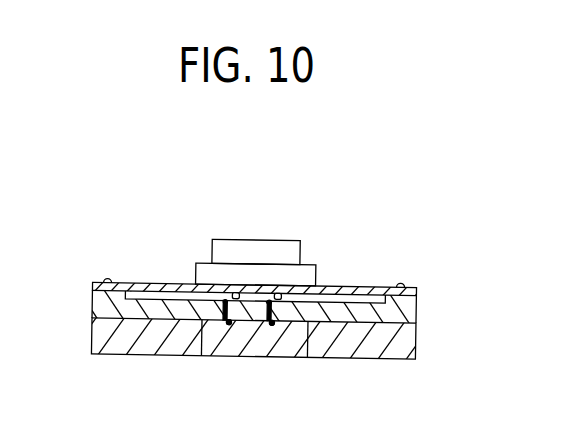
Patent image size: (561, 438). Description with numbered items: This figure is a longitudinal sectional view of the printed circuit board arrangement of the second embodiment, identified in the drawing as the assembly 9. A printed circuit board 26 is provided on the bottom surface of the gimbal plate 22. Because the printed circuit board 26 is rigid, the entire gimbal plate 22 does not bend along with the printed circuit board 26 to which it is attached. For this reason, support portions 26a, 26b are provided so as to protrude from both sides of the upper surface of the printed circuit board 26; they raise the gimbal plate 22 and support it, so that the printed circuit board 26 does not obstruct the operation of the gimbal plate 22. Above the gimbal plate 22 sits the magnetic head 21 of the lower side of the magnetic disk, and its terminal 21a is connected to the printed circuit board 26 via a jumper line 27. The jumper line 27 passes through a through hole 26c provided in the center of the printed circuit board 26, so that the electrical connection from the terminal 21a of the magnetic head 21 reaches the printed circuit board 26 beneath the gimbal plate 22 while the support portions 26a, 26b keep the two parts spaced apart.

The semiconductor device module 9 is at (259, 308).
The magnetic head 21 is at (299, 257).
The terminal 21a is at (237, 293).
The gimbal plate 22 is at (377, 287).
The printed circuit board 26 is at (366, 315).
The support portion 26a is at (92, 310).
The support portion 26b is at (418, 300).
The through hole 26c is at (215, 323).
The jumper line 27 is at (230, 324).